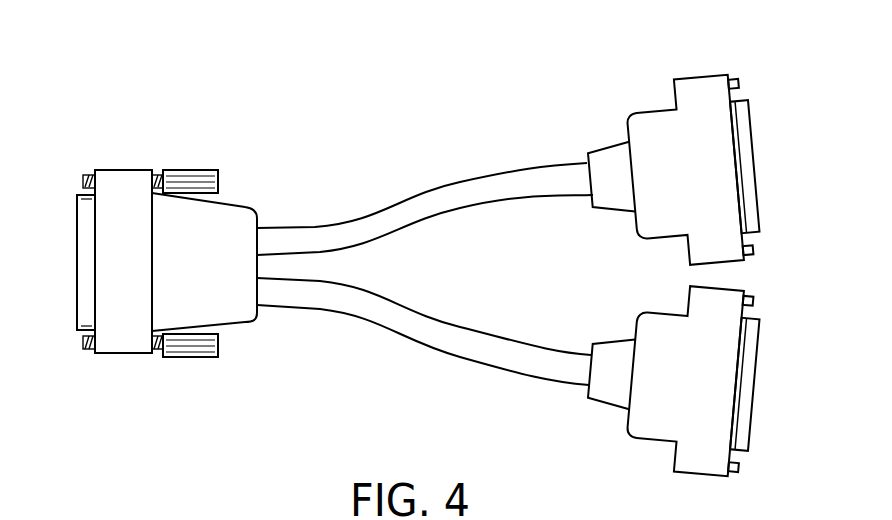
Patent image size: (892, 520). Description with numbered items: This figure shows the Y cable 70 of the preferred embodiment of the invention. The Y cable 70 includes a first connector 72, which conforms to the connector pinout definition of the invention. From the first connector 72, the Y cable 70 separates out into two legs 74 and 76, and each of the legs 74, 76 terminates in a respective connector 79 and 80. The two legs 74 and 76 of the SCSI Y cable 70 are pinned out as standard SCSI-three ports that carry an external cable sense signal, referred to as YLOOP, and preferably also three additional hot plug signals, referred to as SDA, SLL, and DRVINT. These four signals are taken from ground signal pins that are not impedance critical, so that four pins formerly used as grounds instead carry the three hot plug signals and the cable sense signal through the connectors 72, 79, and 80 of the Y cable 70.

The Y cable 70 is at (362, 108).
The first connector 72 is at (163, 271).
The leg 74 is at (458, 180).
The leg 76 is at (458, 357).
The connector 79 is at (682, 179).
The connector 80 is at (682, 401).